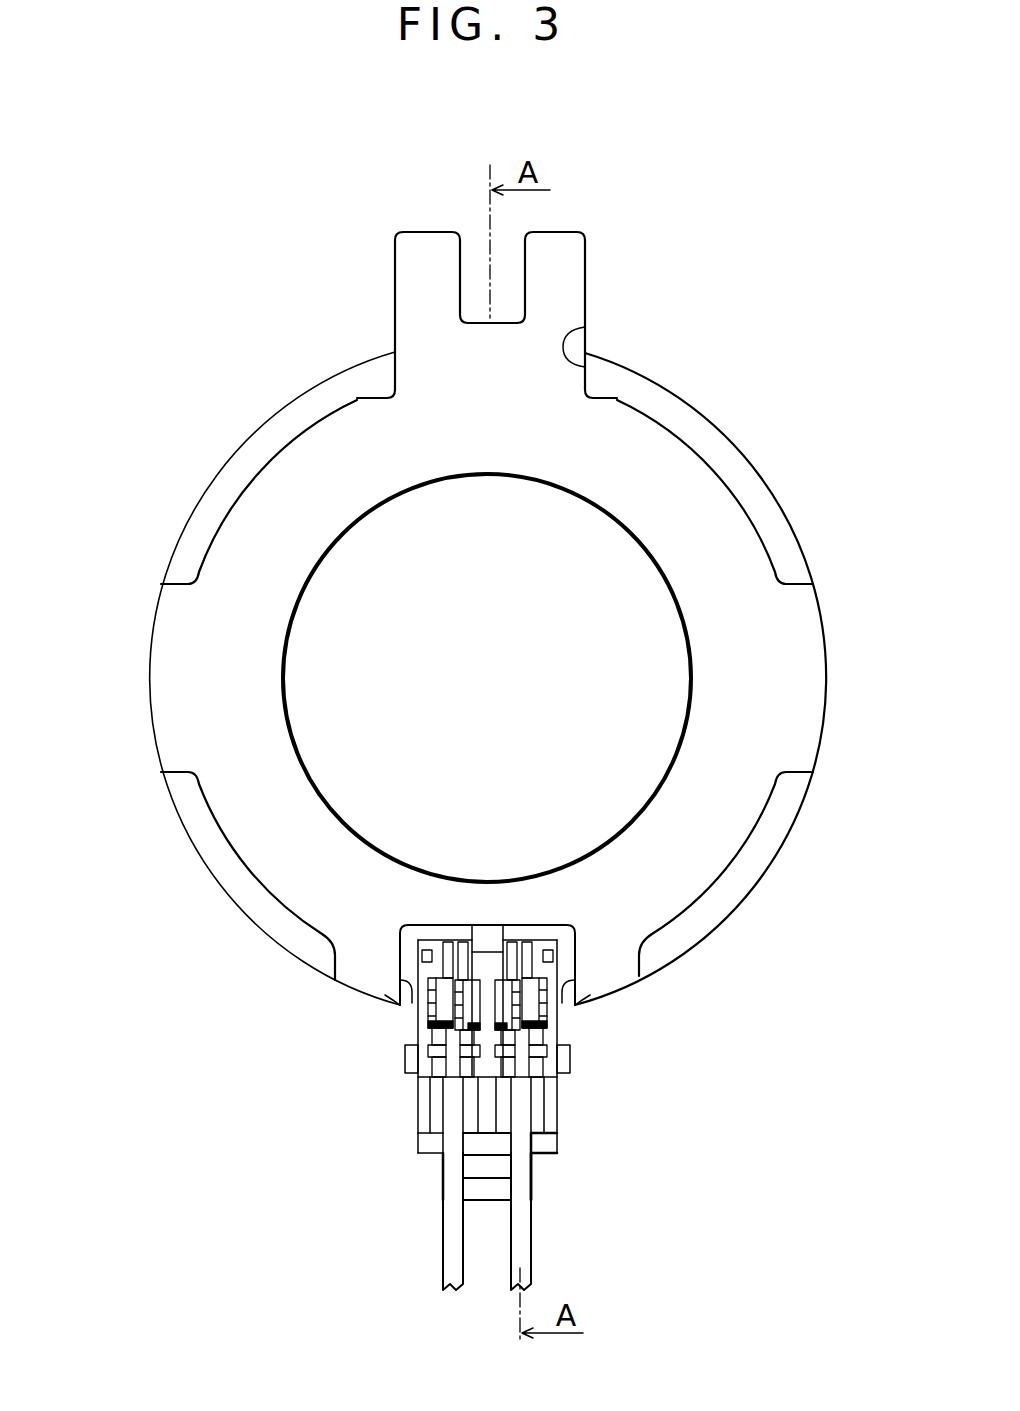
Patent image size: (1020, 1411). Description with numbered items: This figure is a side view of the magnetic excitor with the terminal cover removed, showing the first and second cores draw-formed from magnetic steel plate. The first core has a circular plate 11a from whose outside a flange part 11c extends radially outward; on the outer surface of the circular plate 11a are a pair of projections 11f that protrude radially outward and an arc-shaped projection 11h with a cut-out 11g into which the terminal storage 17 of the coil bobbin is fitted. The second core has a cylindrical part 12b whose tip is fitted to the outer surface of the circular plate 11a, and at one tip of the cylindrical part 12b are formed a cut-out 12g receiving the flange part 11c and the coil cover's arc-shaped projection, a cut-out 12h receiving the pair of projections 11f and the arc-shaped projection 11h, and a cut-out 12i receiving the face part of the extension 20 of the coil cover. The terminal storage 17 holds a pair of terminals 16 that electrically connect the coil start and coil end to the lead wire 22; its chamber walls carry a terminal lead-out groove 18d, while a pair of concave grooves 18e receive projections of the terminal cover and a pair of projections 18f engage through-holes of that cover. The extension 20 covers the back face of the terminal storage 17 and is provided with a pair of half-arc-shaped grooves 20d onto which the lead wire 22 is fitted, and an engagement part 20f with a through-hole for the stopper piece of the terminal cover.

The circular plate 11a is at (700, 468).
The flange part 11c is at (585, 257).
The projections 11f is at (150, 667).
The cut-out 11g is at (440, 925).
The arc-shaped projection 11h is at (632, 995).
The cylindrical part 12b is at (262, 450).
The cut-out 12g is at (585, 333).
The cut-out 12h is at (175, 598).
The cut-out 12i is at (566, 968).
The terminals 16 is at (430, 1012).
The terminal storage 17 is at (560, 1040).
The terminal lead-out groove 18d is at (450, 1100).
The concave grooves 18e is at (424, 955).
The projections 18f is at (407, 1068).
The extension 20 is at (545, 1150).
The half-arc-shaped grooves 20d is at (440, 1175).
The engagement part 20f is at (480, 1198).
The lead wire 22 is at (450, 1245).